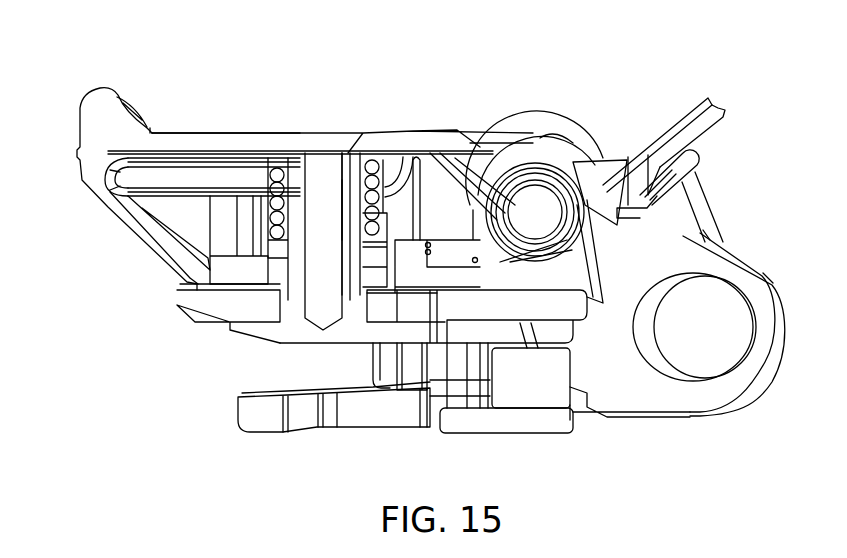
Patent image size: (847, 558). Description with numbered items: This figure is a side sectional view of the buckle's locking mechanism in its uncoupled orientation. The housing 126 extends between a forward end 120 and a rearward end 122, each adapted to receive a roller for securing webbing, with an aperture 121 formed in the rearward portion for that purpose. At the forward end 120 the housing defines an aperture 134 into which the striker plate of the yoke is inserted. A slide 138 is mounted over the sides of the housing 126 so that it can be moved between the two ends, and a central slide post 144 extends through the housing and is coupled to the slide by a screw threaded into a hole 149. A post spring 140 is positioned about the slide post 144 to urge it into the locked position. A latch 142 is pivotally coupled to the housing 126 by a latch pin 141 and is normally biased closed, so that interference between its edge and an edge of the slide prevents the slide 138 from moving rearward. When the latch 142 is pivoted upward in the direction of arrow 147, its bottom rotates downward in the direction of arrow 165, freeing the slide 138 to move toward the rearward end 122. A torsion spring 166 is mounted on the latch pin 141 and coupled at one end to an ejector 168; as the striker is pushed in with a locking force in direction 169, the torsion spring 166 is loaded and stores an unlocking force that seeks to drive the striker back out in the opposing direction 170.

The forward end 120 is at (77, 168).
The aperture 121 is at (733, 368).
The rearward end 122 is at (785, 272).
The housing 126 is at (703, 217).
The aperture 134 is at (283, 367).
The slide 138 is at (205, 133).
The post spring 140 is at (372, 180).
The latch pin 141 is at (541, 200).
The latch 142 is at (715, 125).
The slide post 144 is at (297, 172).
The arrow 147 is at (665, 92).
The hole 149 is at (343, 192).
The arrow 165 is at (450, 222).
The torsion spring 166 is at (520, 327).
The ejector 168 is at (543, 398).
The locking force direction 169 is at (272, 470).
The opposing direction 170 is at (192, 478).